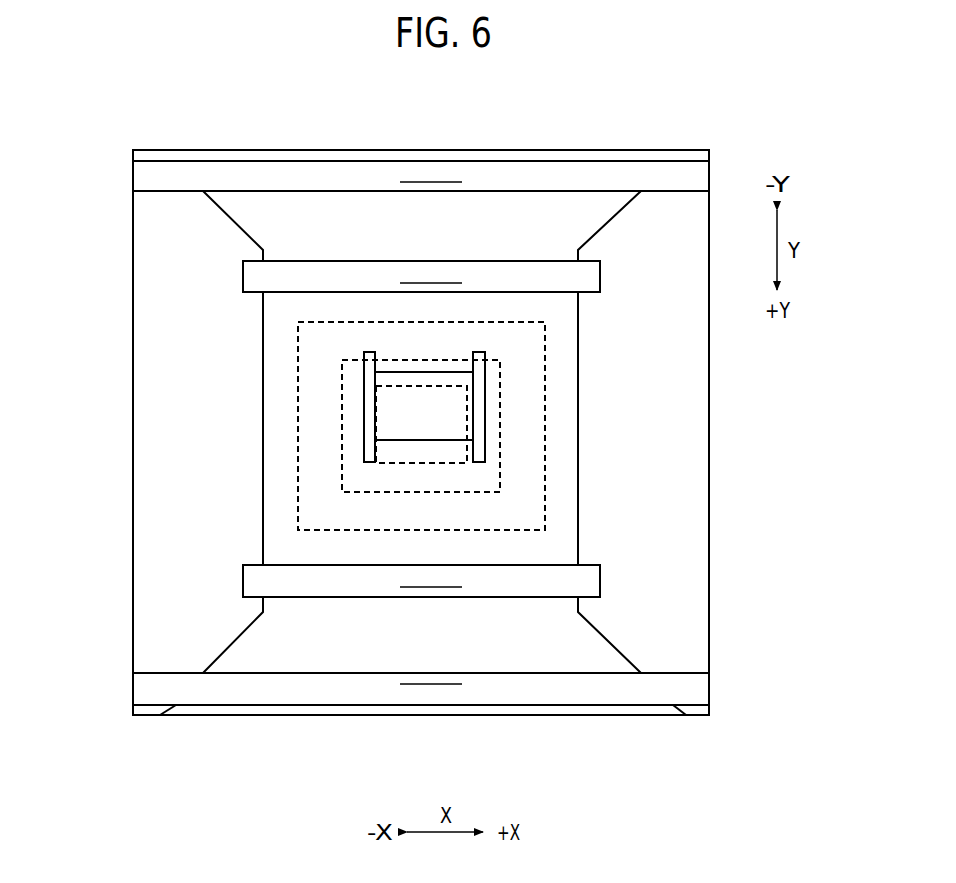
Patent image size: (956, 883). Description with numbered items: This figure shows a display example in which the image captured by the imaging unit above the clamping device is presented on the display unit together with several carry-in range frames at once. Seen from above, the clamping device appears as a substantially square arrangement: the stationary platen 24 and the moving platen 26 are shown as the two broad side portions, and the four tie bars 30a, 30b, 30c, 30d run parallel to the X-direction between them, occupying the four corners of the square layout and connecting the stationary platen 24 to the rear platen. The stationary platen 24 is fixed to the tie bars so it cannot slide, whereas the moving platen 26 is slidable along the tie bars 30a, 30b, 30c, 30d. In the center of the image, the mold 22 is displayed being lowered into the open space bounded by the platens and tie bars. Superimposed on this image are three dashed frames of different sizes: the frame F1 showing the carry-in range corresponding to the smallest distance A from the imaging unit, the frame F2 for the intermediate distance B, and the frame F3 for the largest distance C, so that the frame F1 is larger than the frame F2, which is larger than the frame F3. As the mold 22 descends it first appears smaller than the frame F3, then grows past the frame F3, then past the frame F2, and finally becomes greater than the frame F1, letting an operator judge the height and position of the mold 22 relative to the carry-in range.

The mold 22 is at (364, 416).
The stationary platen 24 is at (690, 382).
The moving platen 26 is at (153, 382).
The tie bar 30a is at (353, 270).
The tie bar 30b is at (232, 172).
The tie bar 30c is at (348, 588).
The tie bar 30d is at (335, 693).
The frame F1 is at (545, 371).
The frame F2 is at (500, 423).
The frame F3 is at (450, 383).